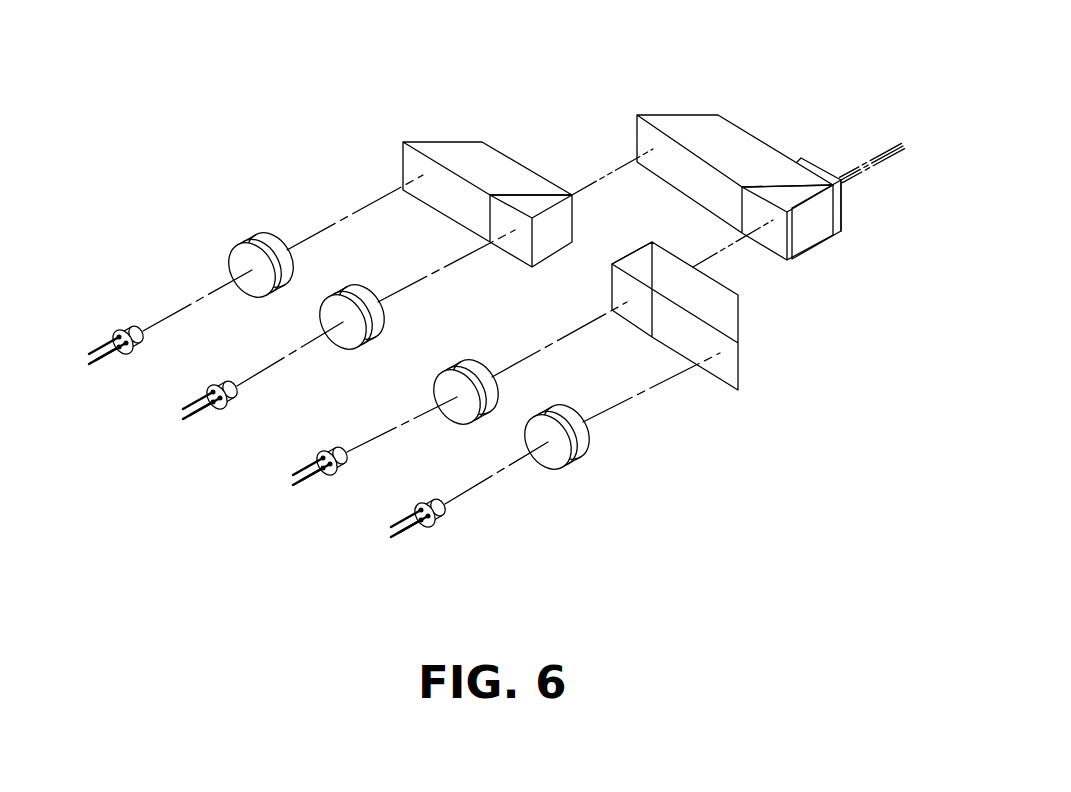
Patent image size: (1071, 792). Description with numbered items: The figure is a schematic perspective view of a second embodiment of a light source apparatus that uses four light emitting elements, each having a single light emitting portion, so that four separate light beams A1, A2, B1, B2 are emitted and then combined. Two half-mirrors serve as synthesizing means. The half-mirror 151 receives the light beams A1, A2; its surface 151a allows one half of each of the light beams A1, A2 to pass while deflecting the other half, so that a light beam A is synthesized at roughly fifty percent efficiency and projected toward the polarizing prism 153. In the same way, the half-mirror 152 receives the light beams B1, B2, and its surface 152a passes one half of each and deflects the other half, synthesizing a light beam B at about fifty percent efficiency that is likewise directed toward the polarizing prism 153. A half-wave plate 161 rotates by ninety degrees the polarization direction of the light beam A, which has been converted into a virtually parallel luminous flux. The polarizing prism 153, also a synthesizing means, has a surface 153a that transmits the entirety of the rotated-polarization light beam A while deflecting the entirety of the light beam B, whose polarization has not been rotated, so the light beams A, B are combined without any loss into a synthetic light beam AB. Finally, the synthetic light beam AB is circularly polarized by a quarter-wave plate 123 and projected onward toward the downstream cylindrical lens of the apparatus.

The half-mirror 151 is at (732, 323).
The surface 151a is at (648, 260).
The half-mirror 152 is at (468, 148).
The surface 152a is at (523, 193).
The polarizing prism 153 is at (693, 123).
The surface 153a is at (772, 187).
The half-wave plate 161 is at (783, 243).
The quarter-wave plate 123 is at (842, 225).
The light beam A is at (733, 251).
The light beam B is at (612, 181).
The synthetic light beam AB is at (872, 174).
The light beam A1 is at (555, 445).
The light beam A2 is at (460, 393).
The light beam B1 is at (349, 324).
The light beam B2 is at (256, 269).